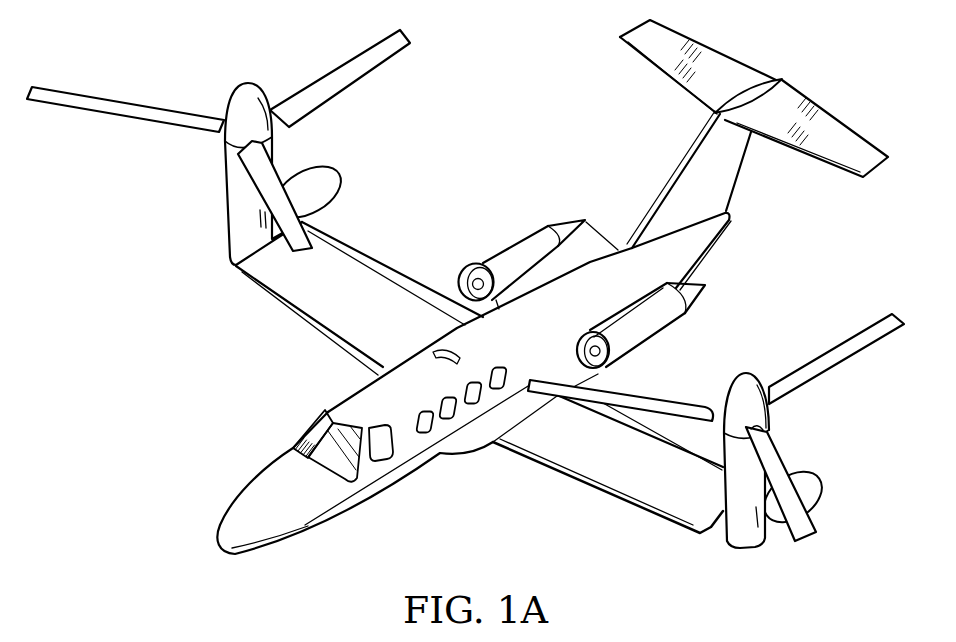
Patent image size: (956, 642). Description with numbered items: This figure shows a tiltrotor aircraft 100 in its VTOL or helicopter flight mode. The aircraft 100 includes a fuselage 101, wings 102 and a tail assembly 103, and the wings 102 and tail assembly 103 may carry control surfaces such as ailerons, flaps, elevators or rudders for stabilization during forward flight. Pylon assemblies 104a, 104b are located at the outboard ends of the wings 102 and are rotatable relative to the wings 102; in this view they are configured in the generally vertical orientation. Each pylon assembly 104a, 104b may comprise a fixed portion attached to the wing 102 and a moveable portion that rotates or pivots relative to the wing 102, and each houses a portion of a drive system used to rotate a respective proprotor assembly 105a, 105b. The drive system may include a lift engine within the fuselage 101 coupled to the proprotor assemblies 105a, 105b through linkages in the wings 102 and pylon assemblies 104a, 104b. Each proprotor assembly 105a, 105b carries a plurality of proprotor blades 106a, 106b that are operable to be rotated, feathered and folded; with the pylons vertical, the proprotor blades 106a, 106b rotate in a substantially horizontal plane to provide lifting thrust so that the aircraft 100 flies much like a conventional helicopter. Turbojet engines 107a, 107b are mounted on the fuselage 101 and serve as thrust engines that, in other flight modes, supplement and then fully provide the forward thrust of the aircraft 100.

The tiltrotor aircraft 100 is at (471, 290).
The fuselage 101 is at (307, 523).
The wings 102 is at (363, 265).
The tail assembly 103 is at (729, 72).
The pylon assembly 104a is at (226, 193).
The pylon assembly 104b is at (723, 490).
The proprotor assembly 105a is at (219, 88).
The proprotor assembly 105b is at (798, 416).
The proprotor blades 106a is at (327, 73).
The proprotor blades 106b is at (846, 340).
The turbojet engine 107a is at (527, 230).
The turbojet engine 107b is at (656, 320).